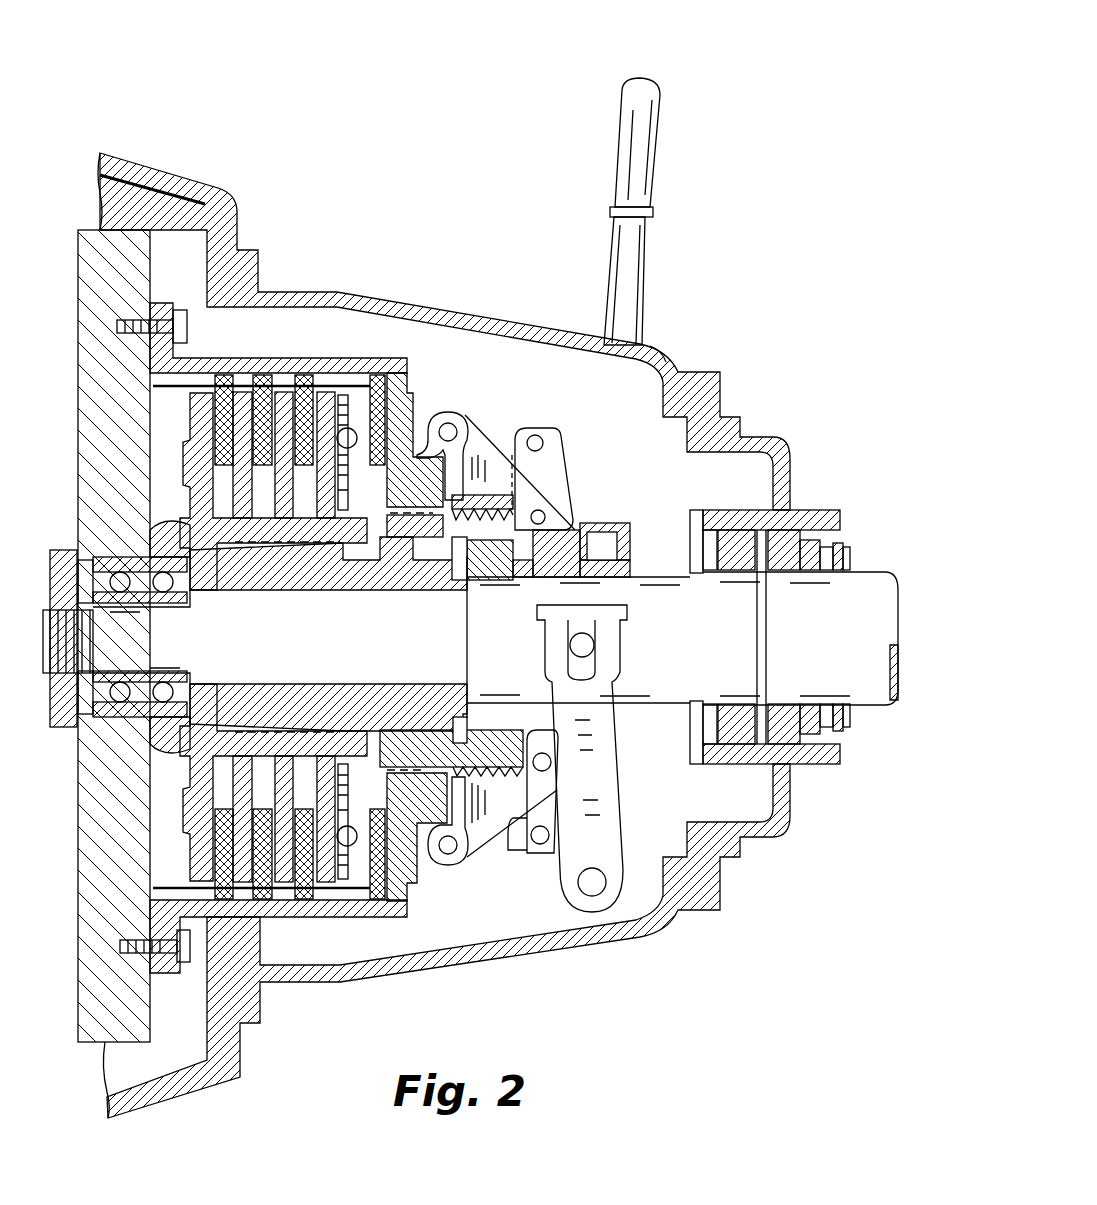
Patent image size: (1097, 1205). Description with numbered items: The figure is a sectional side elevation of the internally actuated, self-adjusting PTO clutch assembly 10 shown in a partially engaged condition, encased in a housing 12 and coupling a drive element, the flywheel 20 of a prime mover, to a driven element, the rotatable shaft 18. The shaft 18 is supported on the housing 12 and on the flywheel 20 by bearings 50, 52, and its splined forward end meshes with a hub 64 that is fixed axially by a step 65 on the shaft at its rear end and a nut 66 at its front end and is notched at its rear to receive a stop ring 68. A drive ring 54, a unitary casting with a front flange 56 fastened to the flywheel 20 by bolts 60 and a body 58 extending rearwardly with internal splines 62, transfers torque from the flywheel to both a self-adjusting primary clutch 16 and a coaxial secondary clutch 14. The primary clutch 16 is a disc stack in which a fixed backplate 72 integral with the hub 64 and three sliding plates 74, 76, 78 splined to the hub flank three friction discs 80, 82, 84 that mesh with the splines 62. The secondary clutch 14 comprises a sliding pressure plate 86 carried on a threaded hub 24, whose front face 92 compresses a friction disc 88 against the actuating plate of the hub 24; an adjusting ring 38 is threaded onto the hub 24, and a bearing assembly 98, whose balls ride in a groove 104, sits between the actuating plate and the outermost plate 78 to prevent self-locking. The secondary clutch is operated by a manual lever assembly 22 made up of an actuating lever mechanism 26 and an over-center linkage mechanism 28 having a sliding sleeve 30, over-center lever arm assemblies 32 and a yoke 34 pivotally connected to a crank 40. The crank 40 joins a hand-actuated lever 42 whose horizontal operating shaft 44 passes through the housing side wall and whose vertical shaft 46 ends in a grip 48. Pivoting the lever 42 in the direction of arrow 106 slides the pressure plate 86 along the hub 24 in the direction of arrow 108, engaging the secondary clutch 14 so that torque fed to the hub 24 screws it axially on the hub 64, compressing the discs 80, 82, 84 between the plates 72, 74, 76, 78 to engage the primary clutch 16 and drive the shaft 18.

The PTO clutch assembly 10 is at (500, 190).
The housing 12 is at (560, 330).
The secondary clutch 14 is at (371, 884).
The primary clutch 16 is at (303, 763).
The shaft 18 is at (870, 578).
The flywheel 20 is at (83, 240).
The lever assembly 22 is at (574, 758).
The threaded hub 24 is at (442, 566).
The actuating lever mechanism 26 is at (693, 197).
The over-center linkage mechanism 28 is at (503, 464).
The sliding sleeve 30 is at (570, 540).
The over-center lever arm assemblies 32 is at (505, 430).
The yoke 34 is at (622, 630).
The adjusting ring 38 is at (498, 835).
The crank 40 is at (590, 780).
The hand-actuated lever 42 is at (658, 341).
The operating shaft 44 is at (597, 880).
The vertical shaft 46 is at (633, 240).
The grip 48 is at (650, 122).
The bearing 50 is at (807, 540).
The bearing 52 is at (100, 560).
The drive ring 54 is at (322, 940).
The front flange 56 is at (153, 313).
The body 58 is at (227, 910).
The bolts 60 is at (120, 947).
The splines 62 is at (427, 887).
The hub 64 is at (227, 572).
The step 65 is at (467, 635).
The nut 66 is at (61, 550).
The stop ring 68 is at (468, 723).
The fixed backplate 72 is at (178, 420).
The sliding plate 74 is at (245, 885).
The sliding plate 76 is at (290, 887).
The sliding plate 78 is at (320, 885).
The friction disc 80 is at (224, 378).
The friction disc 82 is at (262, 378).
The friction disc 84 is at (300, 378).
The pressure plate 86 is at (420, 392).
The friction disc 88 is at (380, 376).
The front face 92 is at (376, 777).
The bearing assembly 98 is at (353, 858).
The groove 104 is at (358, 438).
The arrow 106 is at (595, 58).
The arrow 108 is at (568, 438).